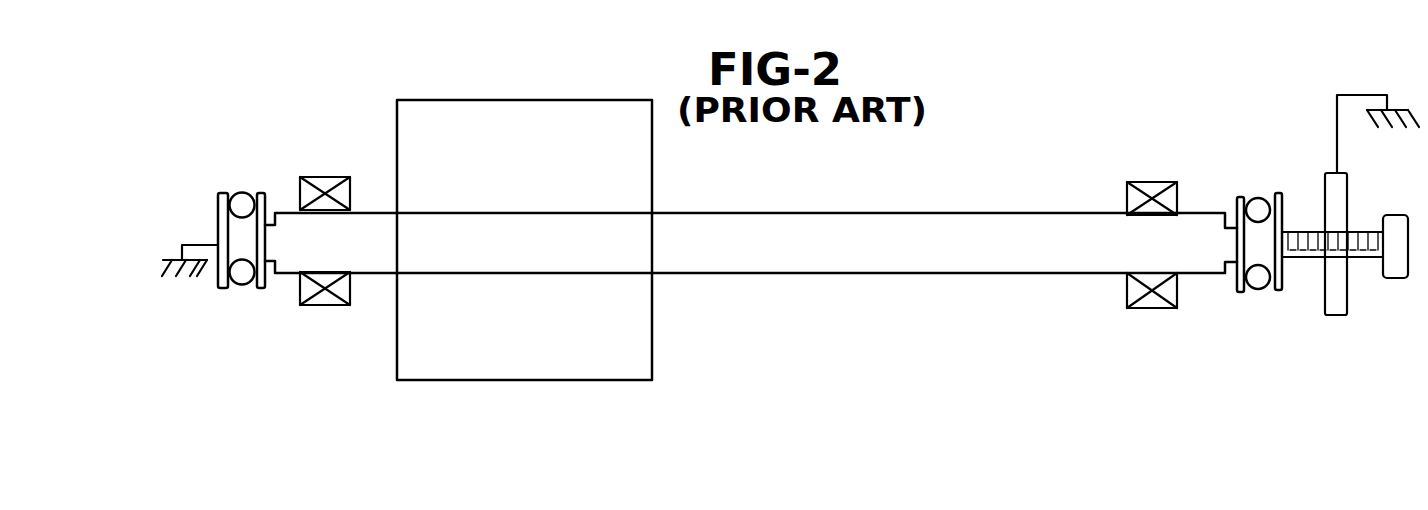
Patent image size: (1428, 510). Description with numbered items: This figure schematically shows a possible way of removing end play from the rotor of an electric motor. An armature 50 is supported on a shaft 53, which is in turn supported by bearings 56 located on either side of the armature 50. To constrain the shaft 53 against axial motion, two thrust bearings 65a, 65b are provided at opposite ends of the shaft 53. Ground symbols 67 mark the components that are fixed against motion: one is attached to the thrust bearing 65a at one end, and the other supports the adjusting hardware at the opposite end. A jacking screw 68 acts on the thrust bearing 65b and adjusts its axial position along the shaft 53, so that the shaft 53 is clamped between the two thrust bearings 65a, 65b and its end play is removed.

The armature 50 is at (508, 98).
The shaft 53 is at (770, 212).
The bearings 56 is at (325, 177).
The thrust bearing 65a is at (272, 163).
The thrust bearing 65b is at (1297, 173).
The ground symbols 67 is at (187, 280).
The jacking screw 68 is at (1366, 258).